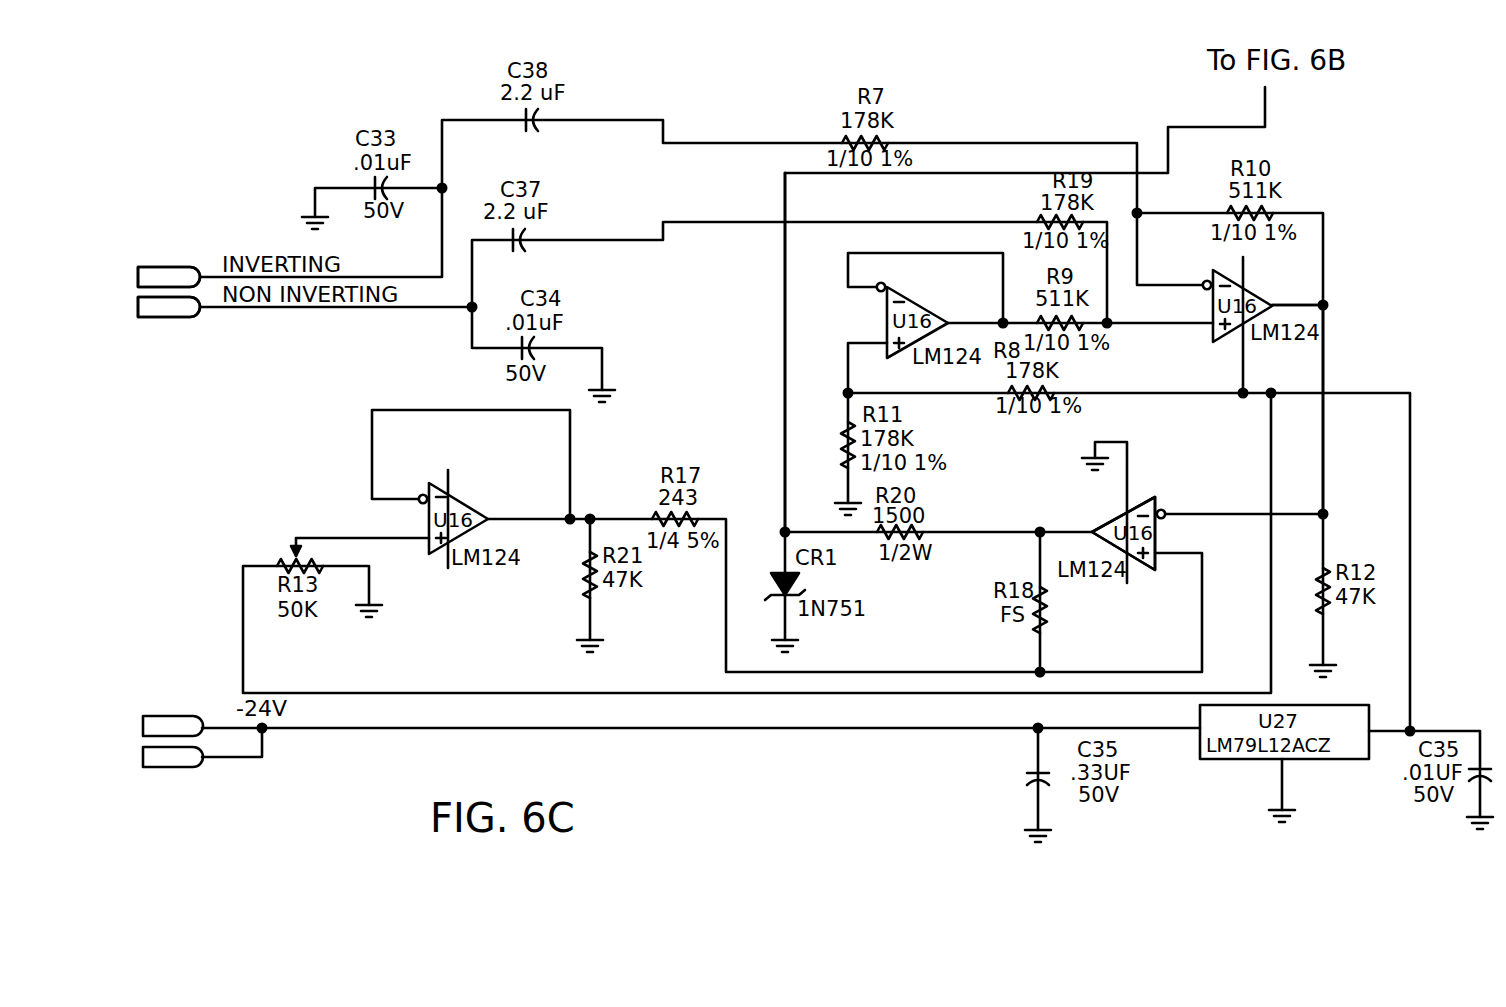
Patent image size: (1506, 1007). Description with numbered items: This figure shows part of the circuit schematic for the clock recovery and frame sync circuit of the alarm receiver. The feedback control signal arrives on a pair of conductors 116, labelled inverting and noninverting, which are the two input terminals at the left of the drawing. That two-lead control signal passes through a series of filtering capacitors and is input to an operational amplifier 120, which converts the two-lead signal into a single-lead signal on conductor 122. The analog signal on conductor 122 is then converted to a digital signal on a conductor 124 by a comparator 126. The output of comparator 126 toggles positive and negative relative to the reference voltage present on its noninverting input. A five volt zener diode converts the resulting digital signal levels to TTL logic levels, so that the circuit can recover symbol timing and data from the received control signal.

The conductors 116 is at (222, 309).
The operational amplifier 120 is at (1264, 300).
The conductor 122 is at (1325, 361).
The conductor 124 is at (784, 355).
The comparator 126 is at (1155, 497).